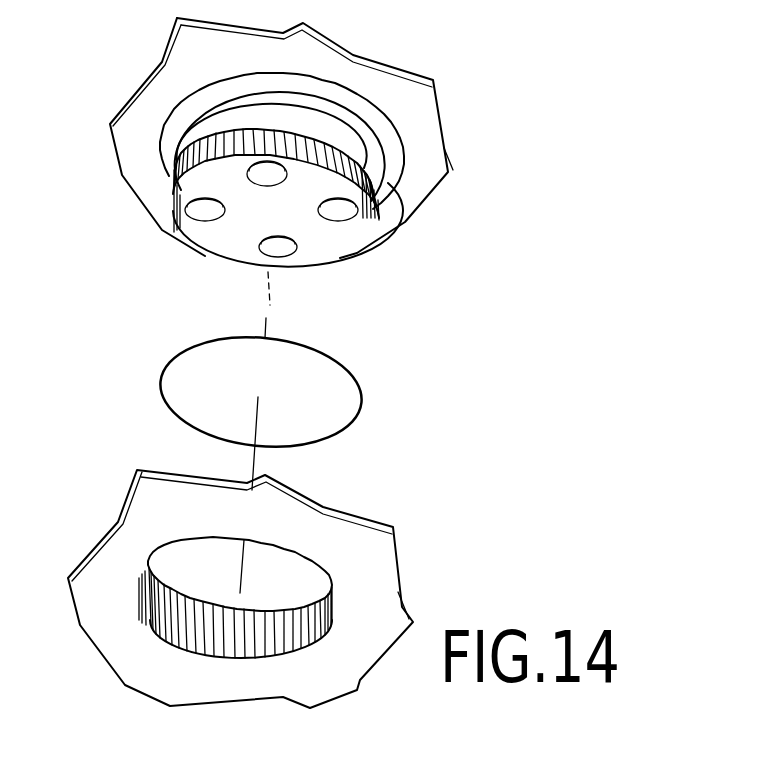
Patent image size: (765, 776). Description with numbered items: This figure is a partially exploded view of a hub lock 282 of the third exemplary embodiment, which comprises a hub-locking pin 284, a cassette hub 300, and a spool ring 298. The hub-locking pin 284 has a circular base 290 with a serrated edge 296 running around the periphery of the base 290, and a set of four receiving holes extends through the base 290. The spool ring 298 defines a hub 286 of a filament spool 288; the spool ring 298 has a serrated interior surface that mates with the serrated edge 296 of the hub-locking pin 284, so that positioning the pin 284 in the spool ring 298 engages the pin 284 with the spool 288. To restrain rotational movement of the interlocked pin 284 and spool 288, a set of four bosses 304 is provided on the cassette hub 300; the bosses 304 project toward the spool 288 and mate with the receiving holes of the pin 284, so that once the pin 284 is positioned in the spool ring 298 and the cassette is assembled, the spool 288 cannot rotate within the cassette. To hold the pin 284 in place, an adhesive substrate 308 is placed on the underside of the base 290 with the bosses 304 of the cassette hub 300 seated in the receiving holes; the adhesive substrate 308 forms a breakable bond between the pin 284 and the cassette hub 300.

The hub lock 282 is at (506, 176).
The hub-locking pin 284 is at (304, 197).
The hub 286 is at (273, 568).
The filament spool 288 is at (289, 593).
The circular base 290 is at (312, 192).
The serrated edge 296 is at (237, 140).
The spool ring 298 is at (247, 637).
The cassette hub 300 is at (333, 133).
The bosses 304 is at (205, 218).
The adhesive substrate 308 is at (337, 398).